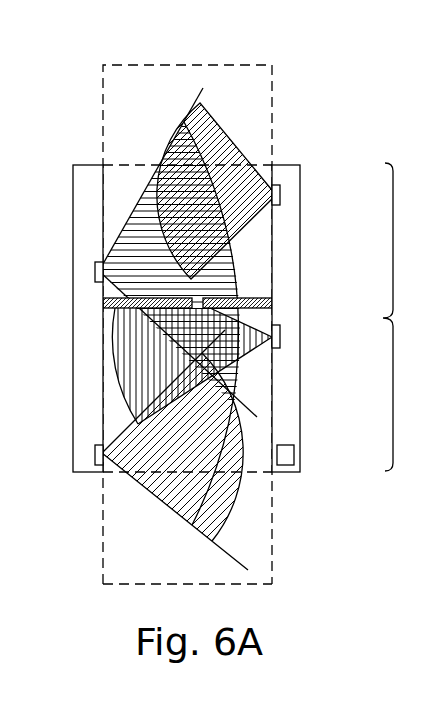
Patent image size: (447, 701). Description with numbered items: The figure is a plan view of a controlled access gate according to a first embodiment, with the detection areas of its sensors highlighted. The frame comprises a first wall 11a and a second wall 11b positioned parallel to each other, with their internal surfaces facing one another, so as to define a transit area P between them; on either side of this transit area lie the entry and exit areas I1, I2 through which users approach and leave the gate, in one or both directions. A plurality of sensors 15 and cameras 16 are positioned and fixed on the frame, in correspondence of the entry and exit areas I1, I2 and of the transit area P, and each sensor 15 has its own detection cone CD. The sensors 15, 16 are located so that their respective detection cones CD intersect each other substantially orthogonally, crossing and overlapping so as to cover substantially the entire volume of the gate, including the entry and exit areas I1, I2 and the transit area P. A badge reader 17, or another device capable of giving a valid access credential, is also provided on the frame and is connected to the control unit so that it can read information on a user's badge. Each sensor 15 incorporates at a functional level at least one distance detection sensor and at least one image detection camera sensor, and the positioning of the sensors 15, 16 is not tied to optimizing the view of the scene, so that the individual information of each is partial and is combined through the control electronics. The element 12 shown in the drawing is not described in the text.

The first wall 11a is at (88, 177).
The second wall 11b is at (290, 168).
The light source bar 12 is at (258, 297).
The sensor 15 is at (190, 318).
The camera 16 is at (281, 191).
The badge reader 17 is at (287, 458).
The detection cone CD is at (196, 140).
The entry area I1 is at (272, 553).
The exit area I2 is at (272, 78).
The transit area P is at (422, 326).